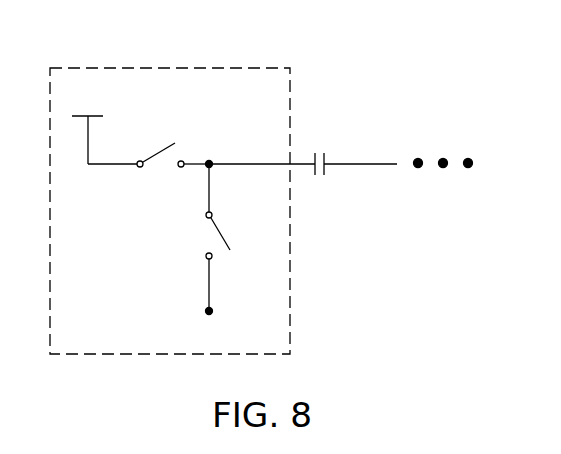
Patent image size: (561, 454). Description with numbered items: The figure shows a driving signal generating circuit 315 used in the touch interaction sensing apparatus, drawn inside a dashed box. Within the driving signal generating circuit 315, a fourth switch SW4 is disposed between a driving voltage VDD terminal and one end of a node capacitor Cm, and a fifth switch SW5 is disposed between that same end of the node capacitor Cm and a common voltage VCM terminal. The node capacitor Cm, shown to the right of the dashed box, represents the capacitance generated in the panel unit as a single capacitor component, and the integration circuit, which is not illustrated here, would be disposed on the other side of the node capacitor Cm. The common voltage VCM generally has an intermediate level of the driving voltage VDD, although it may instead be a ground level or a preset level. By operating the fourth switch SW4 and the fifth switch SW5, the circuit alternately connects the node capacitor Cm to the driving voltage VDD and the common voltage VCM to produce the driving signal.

The driving signal generating circuit 315 is at (168, 65).
The driving voltage VDD is at (87, 127).
The fourth switch SW4 is at (148, 169).
The fifth switch SW5 is at (241, 237).
The common voltage VCM is at (208, 324).
The node capacitor Cm is at (303, 153).